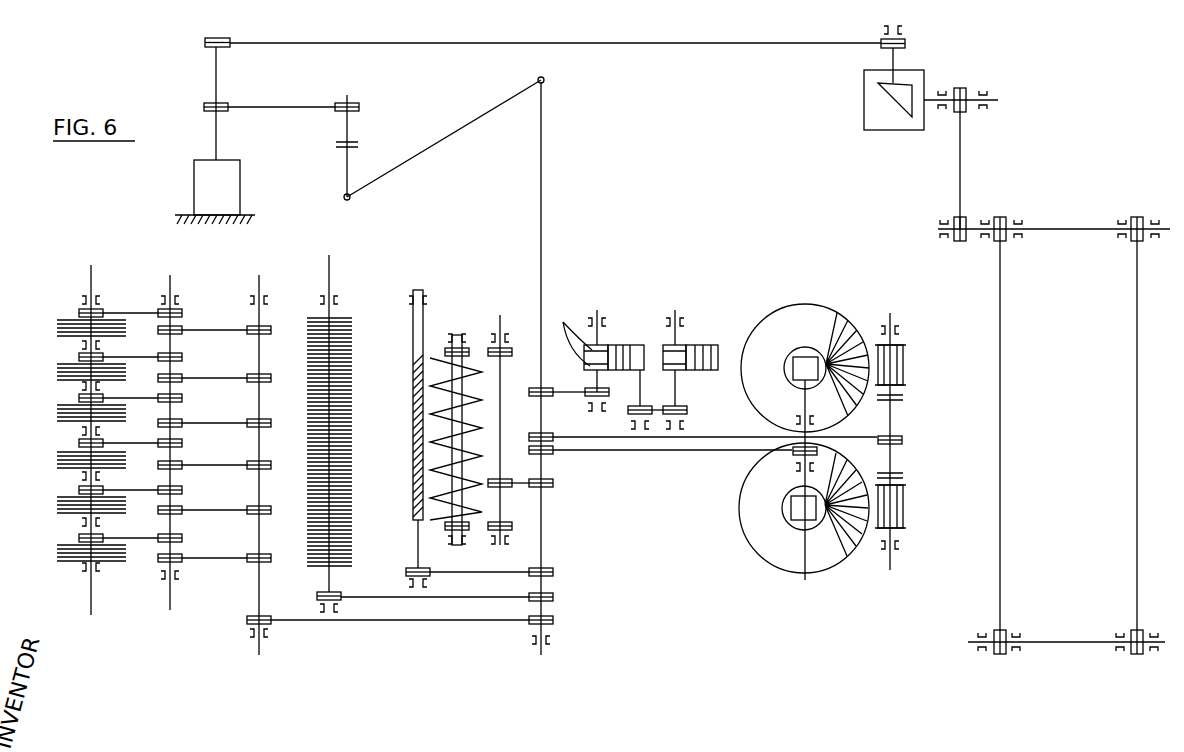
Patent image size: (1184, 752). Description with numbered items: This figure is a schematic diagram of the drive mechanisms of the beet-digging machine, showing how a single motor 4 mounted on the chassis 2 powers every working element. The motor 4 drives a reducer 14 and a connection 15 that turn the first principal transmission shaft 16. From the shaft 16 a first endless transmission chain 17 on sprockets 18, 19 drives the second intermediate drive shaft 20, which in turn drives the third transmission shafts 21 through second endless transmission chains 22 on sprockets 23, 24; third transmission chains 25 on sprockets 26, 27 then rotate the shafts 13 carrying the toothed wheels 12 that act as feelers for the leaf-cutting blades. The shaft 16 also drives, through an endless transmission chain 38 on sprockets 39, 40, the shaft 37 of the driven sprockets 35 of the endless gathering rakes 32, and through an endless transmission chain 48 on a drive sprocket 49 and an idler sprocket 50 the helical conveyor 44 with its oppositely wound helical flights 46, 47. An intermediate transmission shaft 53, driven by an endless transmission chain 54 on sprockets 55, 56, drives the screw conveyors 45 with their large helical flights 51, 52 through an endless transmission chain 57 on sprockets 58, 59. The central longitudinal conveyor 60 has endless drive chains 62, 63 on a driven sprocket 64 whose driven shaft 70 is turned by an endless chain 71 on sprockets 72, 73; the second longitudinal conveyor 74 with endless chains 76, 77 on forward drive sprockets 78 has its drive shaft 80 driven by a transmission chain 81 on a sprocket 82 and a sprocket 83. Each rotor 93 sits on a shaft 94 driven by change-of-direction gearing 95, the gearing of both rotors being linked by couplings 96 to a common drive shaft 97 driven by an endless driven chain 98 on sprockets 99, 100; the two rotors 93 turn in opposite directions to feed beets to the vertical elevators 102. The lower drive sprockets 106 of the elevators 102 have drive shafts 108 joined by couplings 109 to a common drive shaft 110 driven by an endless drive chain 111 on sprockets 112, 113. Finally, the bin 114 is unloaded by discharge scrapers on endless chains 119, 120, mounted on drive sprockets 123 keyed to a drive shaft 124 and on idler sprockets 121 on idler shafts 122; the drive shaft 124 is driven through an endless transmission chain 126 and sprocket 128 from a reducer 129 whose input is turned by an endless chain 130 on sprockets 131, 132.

The chassis 2 is at (250, 215).
The motor 4 is at (200, 190).
The toothed wheels 12 is at (70, 562).
The shaft 13 is at (91, 615).
The reducer 14 is at (270, 104).
The connection 15 is at (435, 142).
The first principal transmission shaft 16 is at (541, 182).
The first endless transmission chain 17 is at (403, 620).
The sprocket 18 is at (553, 620).
The sprocket 19 is at (248, 630).
The second intermediate drive shaft 20 is at (280, 598).
The third transmission shafts 21 is at (183, 345).
The second endless transmission chains 22 is at (195, 423).
The sprocket 23 is at (252, 505).
The sprocket 24 is at (185, 328).
The third transmission chains 25 is at (137, 540).
The sprocket 26 is at (182, 305).
The sprocket 27 is at (80, 539).
The endless gathering rakes 32 is at (352, 364).
The driven sprocket 35 is at (340, 597).
The shaft 37 is at (345, 572).
The endless transmission chain 38 is at (472, 600).
The sprocket 39 is at (553, 597).
The sprocket 40 is at (318, 600).
The helical conveyor 44 is at (420, 290).
The screw conveyors 45 is at (443, 400).
The helical flight 46 is at (413, 365).
The helical flight 47 is at (413, 472).
The endless transmission chain 48 is at (604, 522).
The drive sprocket 49 is at (553, 572).
The idler sprocket 50 is at (403, 572).
The helical flight 51 is at (475, 393).
The helical flight 52 is at (462, 450).
The intermediate transmission shaft 53 is at (500, 395).
The endless transmission chain 54 is at (513, 496).
The sprocket 55 is at (553, 483).
The sprocket 56 is at (509, 471).
The endless transmission chain 57 is at (482, 348).
The sprocket 58 is at (507, 335).
The sprocket 59 is at (440, 336).
The central longitudinal conveyor 60 is at (612, 340).
The endless drive chain 62 is at (612, 340).
The endless drive chain 63 is at (626, 388).
The driven sprocket 64 is at (571, 333).
The driven shaft 70 is at (597, 310).
The endless chain 71 is at (578, 407).
The sprocket 72 is at (551, 377).
The sprocket 73 is at (556, 432).
The second longitudinal conveyor 74 is at (715, 327).
The endless chain 76 is at (713, 340).
The endless chain 77 is at (712, 372).
The forward drive sprocket 78 is at (688, 372).
The drive shaft 80 is at (683, 393).
The transmission chain 81 is at (662, 396).
The sprocket 82 is at (678, 418).
The sprocket 83 is at (630, 415).
The rotor 93 is at (845, 318).
The shaft 94 is at (800, 345).
The change-of-direction gearing 95 is at (793, 368).
The couplings 96 is at (850, 417).
The common drive shaft 97 is at (800, 430).
The endless driven chain 98 is at (730, 462).
The sprocket 99 is at (556, 452).
The sprocket 100 is at (783, 482).
The vertical elevators 102 is at (914, 367).
The lower drive sprockets 106 is at (905, 386).
The drive shafts 108 is at (895, 320).
The couplings 109 is at (905, 397).
The common drive shaft 110 is at (893, 465).
The endless drive chain 111 is at (751, 427).
The sprocket 112 is at (691, 430).
The sprocket 113 is at (905, 440).
The bin 114 is at (1097, 221).
The endless chain 119 is at (1001, 455).
The endless chain 120 is at (1137, 395).
The idler sprockets 121 is at (1003, 632).
The idler shafts 122 is at (1056, 633).
The drive sprockets 123 is at (1003, 217).
The drive shaft 124 is at (1040, 229).
The endless transmission chain 126 is at (960, 152).
The sprocket 128 is at (968, 95).
The reducer 129 is at (864, 119).
The endless chain 130 is at (612, 45).
The sprocket 131 is at (204, 43).
The sprocket 132 is at (905, 44).